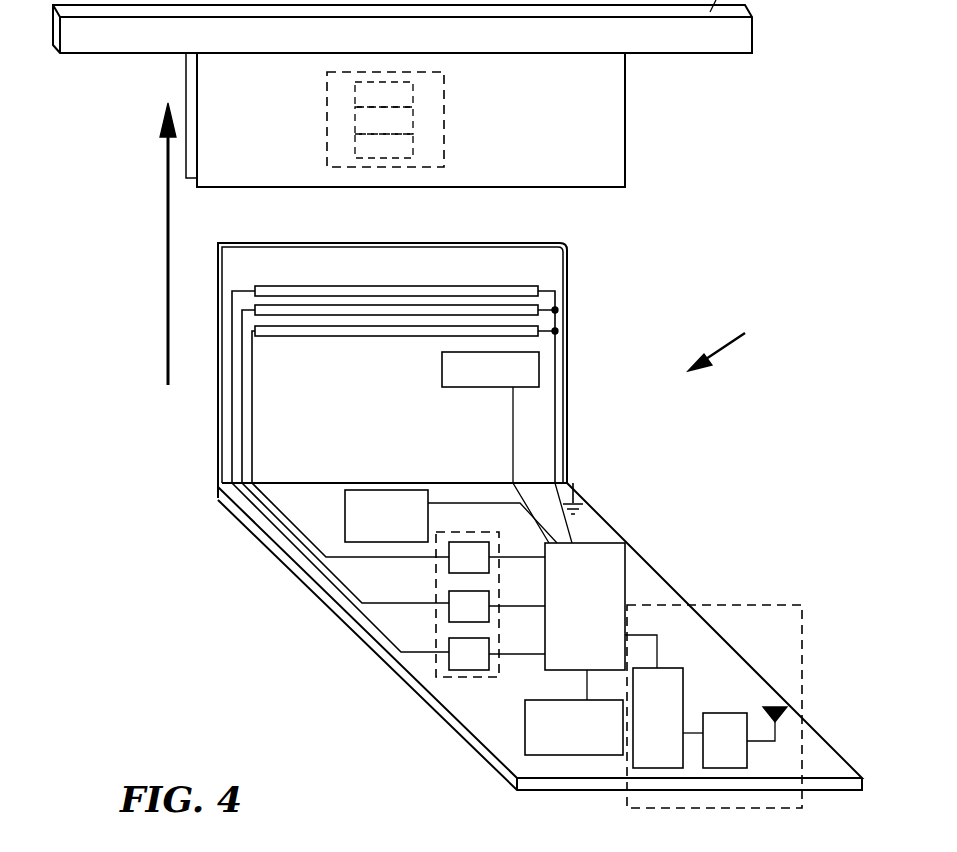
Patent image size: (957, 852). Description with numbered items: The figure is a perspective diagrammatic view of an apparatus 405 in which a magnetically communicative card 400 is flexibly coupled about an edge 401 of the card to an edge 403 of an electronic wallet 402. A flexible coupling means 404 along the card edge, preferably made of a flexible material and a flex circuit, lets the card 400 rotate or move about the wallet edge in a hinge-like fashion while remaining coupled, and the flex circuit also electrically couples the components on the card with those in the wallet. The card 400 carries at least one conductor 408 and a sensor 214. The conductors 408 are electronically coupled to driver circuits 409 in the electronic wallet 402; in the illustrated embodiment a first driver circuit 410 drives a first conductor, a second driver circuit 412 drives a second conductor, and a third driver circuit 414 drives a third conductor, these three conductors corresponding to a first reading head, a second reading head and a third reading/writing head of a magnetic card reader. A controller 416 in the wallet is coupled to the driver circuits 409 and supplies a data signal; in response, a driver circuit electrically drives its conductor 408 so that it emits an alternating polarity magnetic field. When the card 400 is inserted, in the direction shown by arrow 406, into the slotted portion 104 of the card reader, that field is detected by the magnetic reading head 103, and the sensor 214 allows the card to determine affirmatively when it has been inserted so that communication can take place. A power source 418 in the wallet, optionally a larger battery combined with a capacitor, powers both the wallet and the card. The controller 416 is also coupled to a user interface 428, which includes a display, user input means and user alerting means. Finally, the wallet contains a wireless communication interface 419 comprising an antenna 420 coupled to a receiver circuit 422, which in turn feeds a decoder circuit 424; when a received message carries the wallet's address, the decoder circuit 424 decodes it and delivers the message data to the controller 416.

The magnetic reading head 103 is at (413, 90).
The slotted portion 104 is at (196, 78).
The sensor 214 is at (512, 388).
The magnetically communicative card 400 is at (305, 242).
The edge of the card 401 is at (265, 483).
The electronic wallet 402 is at (862, 768).
The edge of the electronic wallet 403 is at (264, 507).
The flexible coupling means 404 is at (568, 483).
The apparatus 405 is at (736, 338).
The arrow 406 is at (166, 254).
The conductor 408 is at (333, 287).
The driver circuit 409 is at (475, 678).
The first driver circuit 410 is at (452, 666).
The second driver circuit 412 is at (450, 619).
The third driver circuit 414 is at (452, 573).
The controller 416 is at (545, 672).
The power source 418 is at (345, 512).
The wireless communication interface 419 is at (720, 605).
The antenna 420 is at (787, 718).
The receiver circuit 422 is at (712, 769).
The decoder circuit 424 is at (668, 769).
The user interface 428 is at (588, 757).